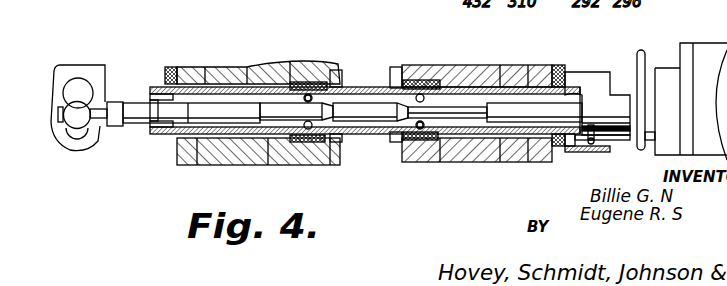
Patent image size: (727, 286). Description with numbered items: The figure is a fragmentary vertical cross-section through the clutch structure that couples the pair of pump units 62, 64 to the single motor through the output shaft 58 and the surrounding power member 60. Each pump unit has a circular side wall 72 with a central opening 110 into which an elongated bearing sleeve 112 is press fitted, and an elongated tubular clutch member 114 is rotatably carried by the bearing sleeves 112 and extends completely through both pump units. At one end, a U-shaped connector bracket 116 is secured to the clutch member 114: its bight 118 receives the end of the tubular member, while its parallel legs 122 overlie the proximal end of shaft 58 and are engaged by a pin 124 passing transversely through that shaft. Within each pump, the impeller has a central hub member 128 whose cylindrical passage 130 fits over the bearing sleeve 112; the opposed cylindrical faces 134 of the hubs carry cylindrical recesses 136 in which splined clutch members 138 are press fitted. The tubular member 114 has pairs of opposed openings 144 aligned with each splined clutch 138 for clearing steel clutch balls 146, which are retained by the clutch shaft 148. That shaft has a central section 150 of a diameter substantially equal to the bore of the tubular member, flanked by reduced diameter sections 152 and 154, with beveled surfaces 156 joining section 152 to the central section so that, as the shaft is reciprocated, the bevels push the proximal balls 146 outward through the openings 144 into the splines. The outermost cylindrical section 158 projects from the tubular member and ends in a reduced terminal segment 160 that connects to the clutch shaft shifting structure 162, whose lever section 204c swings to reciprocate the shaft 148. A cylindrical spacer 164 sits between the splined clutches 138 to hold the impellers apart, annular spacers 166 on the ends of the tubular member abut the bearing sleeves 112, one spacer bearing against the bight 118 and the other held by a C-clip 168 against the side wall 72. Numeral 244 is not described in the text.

The output shaft 58 is at (618, 94).
The power member 60 is at (654, 87).
The pump unit 62 is at (196, 65).
The pump unit 64 is at (536, 63).
The circular side wall 72 is at (174, 68).
The central opening 110 is at (175, 88).
The bearing sleeve 112 is at (247, 67).
The tubular clutch member 114 is at (381, 88).
The connector bracket 116 is at (577, 164).
The bight 118 is at (558, 148).
The parallel legs 122 is at (603, 153).
The pin 124 is at (590, 150).
The hub member 128 is at (281, 78).
The cylindrical passage 130 is at (208, 80).
The cylindrical face 134 is at (340, 70).
The cylindrical recess 136 is at (312, 82).
The splined clutch member 138 is at (449, 88).
The opposed openings 144 is at (345, 86).
The clutch ball 146 is at (301, 144).
The clutch shaft 148 is at (495, 113).
The central section 150 is at (355, 139).
The reduced diameter section 152 is at (261, 144).
The reduced diameter section 154 is at (472, 148).
The beveled surface 156 is at (370, 143).
The outermost cylindrical section 158 is at (140, 127).
The terminal segment 160 is at (99, 142).
The clutch shaft shifting structure 162 is at (58, 62).
The cylindrical spacer 164 is at (378, 147).
The annular spacer 166 is at (171, 141).
The C-clip 168 is at (157, 142).
The lever section 204c is at (86, 75).
The ball 244 is at (72, 118).